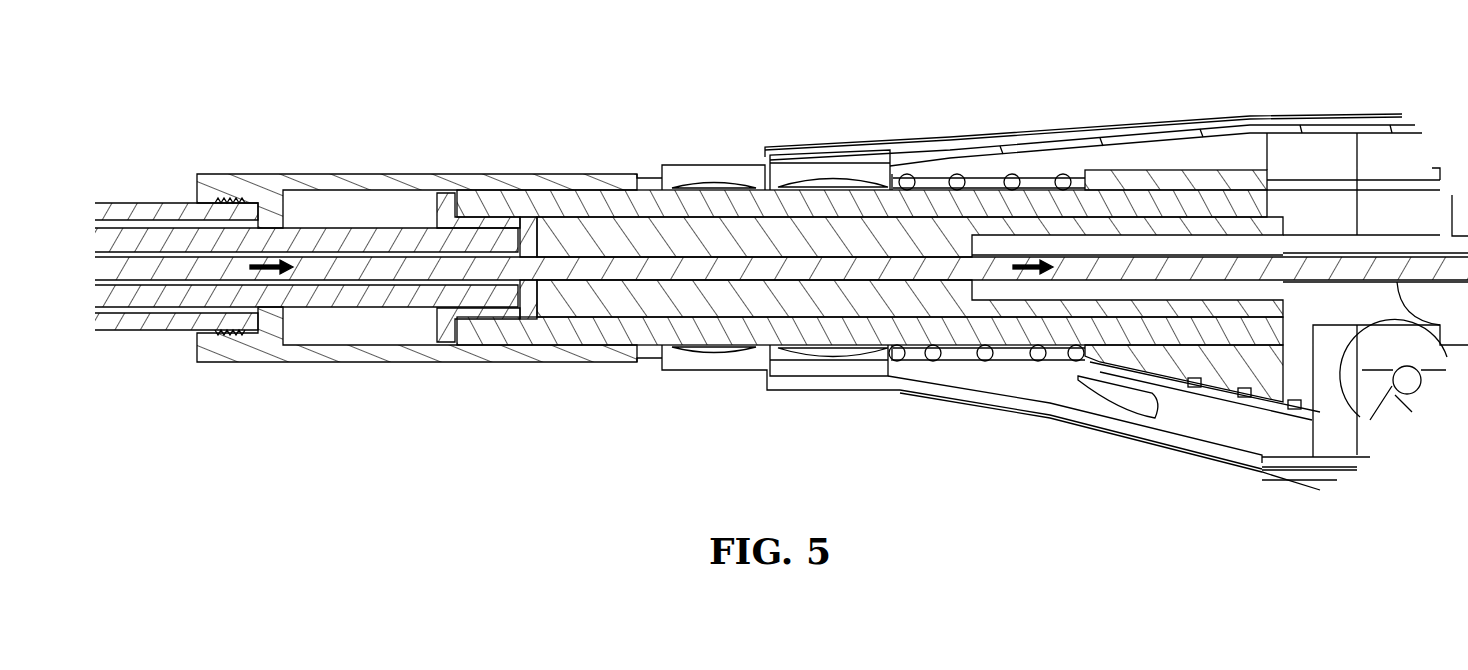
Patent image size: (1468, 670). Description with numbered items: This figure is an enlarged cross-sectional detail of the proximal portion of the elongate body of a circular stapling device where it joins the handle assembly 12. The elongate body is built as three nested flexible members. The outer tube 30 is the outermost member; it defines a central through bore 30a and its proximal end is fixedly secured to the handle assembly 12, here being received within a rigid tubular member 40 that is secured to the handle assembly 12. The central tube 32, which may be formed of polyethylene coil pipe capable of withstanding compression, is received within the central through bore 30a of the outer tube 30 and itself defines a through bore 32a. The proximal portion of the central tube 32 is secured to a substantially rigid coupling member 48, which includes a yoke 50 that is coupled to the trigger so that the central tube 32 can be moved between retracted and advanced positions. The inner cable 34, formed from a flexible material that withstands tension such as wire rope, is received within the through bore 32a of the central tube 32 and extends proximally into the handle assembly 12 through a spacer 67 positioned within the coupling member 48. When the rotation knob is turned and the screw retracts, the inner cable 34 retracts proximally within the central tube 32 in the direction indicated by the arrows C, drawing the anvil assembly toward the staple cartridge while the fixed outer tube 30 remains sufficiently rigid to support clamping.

The handle assembly 12 is at (1340, 106).
The outer tube 30 is at (152, 203).
The central through bore 30a is at (160, 307).
The central tube 32 is at (303, 297).
The through bore 32a is at (401, 282).
The inner cable 34 is at (648, 268).
The rigid tubular member 40 is at (405, 172).
The coupling member 48 is at (735, 337).
The yoke 50 is at (1327, 387).
The spacer 67 is at (853, 305).
The arrows C is at (254, 262).